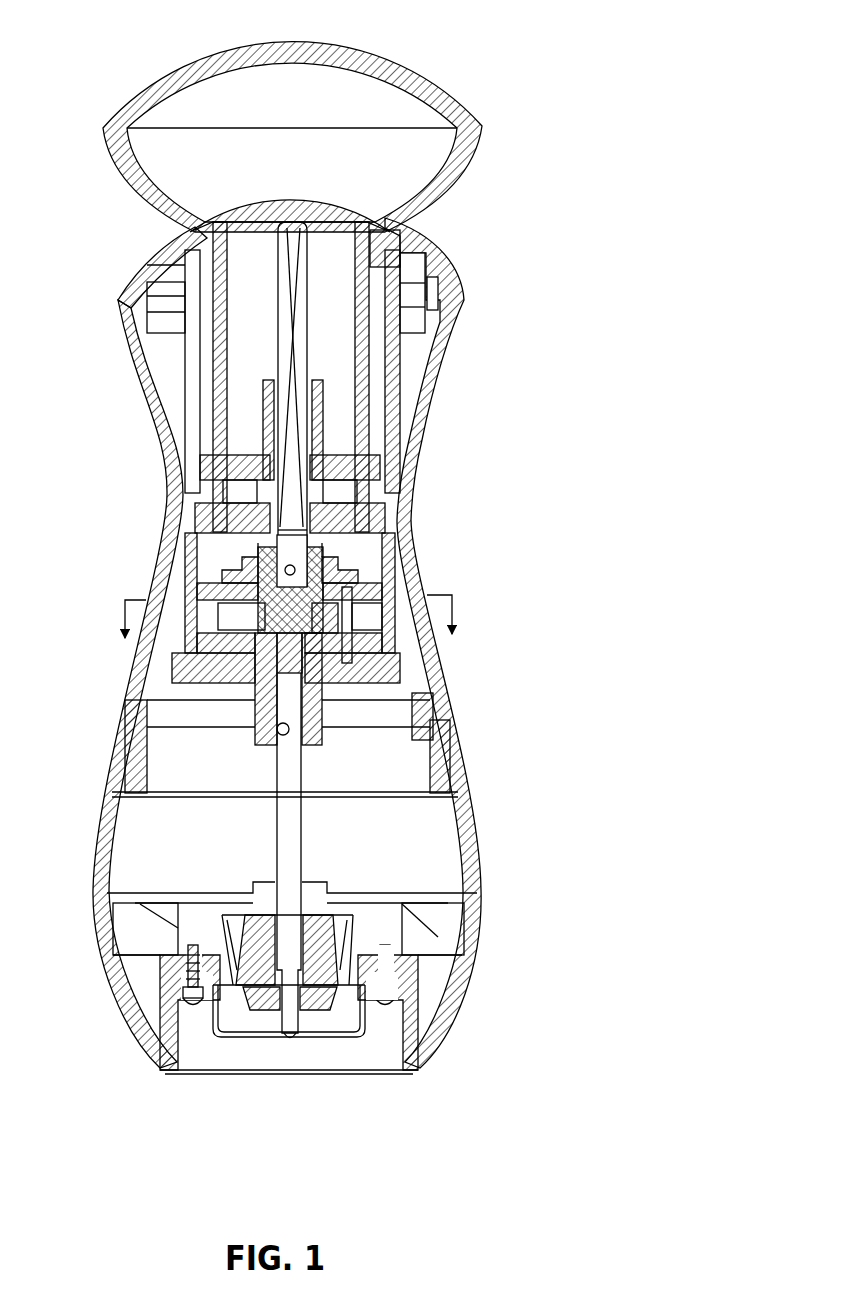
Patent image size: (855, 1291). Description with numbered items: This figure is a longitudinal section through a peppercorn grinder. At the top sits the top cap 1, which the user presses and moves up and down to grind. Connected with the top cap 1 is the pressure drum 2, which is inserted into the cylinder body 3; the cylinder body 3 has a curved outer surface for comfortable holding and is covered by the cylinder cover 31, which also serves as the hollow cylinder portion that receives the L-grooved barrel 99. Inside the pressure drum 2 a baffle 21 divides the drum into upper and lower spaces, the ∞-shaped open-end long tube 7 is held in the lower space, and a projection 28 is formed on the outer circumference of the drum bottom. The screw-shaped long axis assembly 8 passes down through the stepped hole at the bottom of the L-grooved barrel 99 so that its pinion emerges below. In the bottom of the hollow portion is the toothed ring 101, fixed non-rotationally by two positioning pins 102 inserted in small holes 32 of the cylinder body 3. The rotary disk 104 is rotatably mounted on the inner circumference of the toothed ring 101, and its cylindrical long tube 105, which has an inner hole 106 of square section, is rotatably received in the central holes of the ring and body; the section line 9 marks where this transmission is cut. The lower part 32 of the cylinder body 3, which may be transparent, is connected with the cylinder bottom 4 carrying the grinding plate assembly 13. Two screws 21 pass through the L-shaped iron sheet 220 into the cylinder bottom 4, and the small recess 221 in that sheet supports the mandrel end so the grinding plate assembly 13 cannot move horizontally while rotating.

The top cap 1 is at (376, 79).
The pressure drum 2 is at (400, 256).
The cylinder body 3 is at (430, 507).
The cylinder cover 31 is at (146, 264).
The screw-shaped long axis assembly 8 is at (283, 308).
The screw 21 is at (250, 440).
The projection 28 is at (170, 530).
The L-grooved barrel 99 is at (405, 350).
The ∞-shaped open-end long tube 7 is at (325, 415).
The section line 9— 9 is at (285, 615).
The rotary disk 104 is at (185, 668).
The toothed ring 101 is at (428, 658).
The positioning pin 102 is at (398, 688).
The cylindrical long tube 105 is at (253, 720).
The inner hole 106 is at (273, 750).
The lower part of the cylinder body 32 is at (113, 798).
The cylinder bottom 4 is at (105, 951).
The grinding plate assembly 13 is at (241, 990).
The small recess 221 is at (291, 1041).
The L-shaped iron sheet 220 is at (353, 1034).